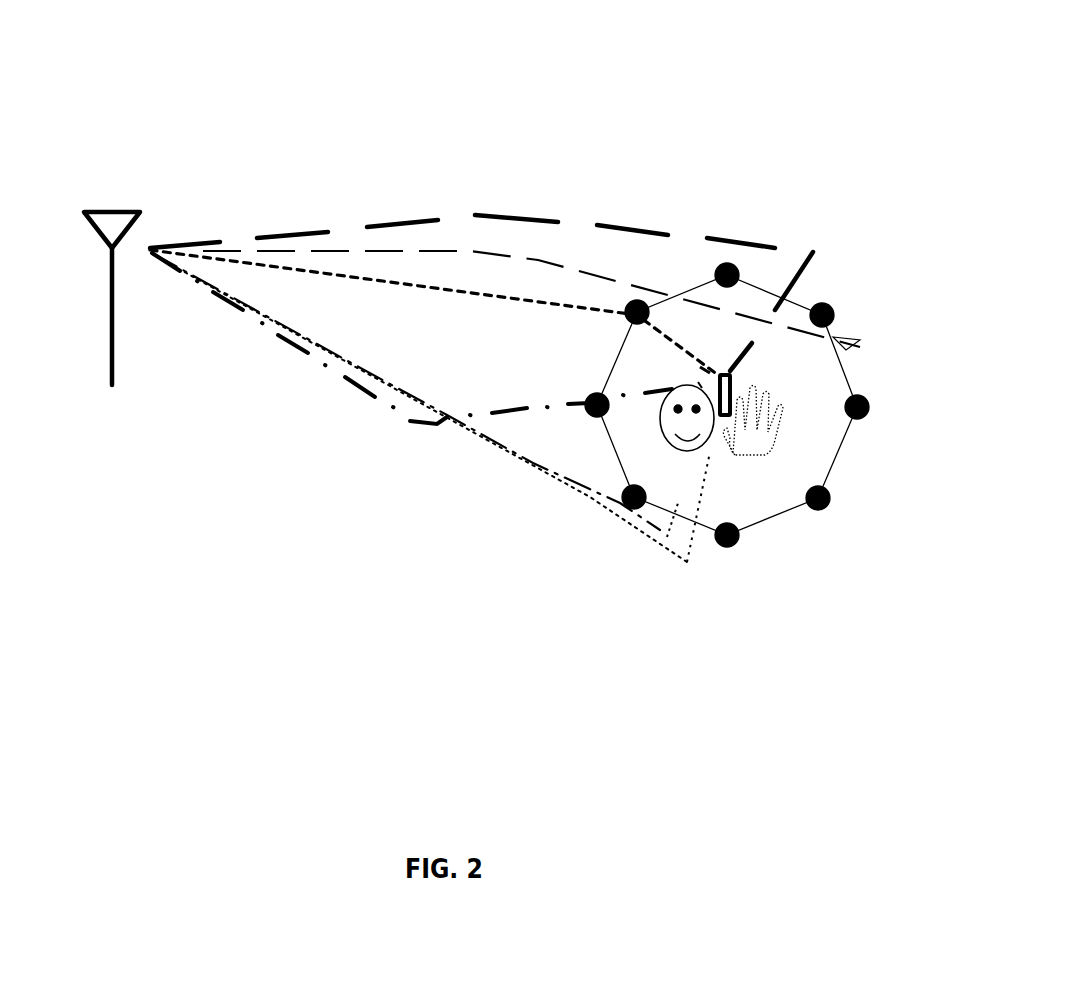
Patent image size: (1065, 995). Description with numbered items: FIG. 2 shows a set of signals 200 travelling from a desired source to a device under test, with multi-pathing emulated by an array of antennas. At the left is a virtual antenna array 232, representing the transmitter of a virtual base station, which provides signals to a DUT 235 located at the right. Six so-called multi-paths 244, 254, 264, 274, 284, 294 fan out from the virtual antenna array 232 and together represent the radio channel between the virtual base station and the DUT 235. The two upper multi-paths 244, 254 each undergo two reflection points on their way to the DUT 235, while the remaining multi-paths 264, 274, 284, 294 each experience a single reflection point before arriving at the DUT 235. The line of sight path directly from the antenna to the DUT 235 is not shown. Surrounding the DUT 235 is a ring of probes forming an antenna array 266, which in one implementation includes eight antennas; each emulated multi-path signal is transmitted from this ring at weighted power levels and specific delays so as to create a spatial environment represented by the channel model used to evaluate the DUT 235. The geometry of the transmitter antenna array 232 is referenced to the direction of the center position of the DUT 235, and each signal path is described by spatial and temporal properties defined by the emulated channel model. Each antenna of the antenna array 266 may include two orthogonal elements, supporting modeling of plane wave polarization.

The wireless communication environment 200 is at (1031, 38).
The virtual antenna array 232 is at (143, 210).
The multi-path 244 is at (522, 217).
The multi-path 254 is at (560, 265).
The multi-path 264 is at (478, 297).
The multi-path 274 is at (510, 407).
The multi-path 284 is at (503, 447).
The multi-path 294 is at (688, 543).
The DUT 235 is at (733, 393).
The antenna array 266 is at (745, 538).